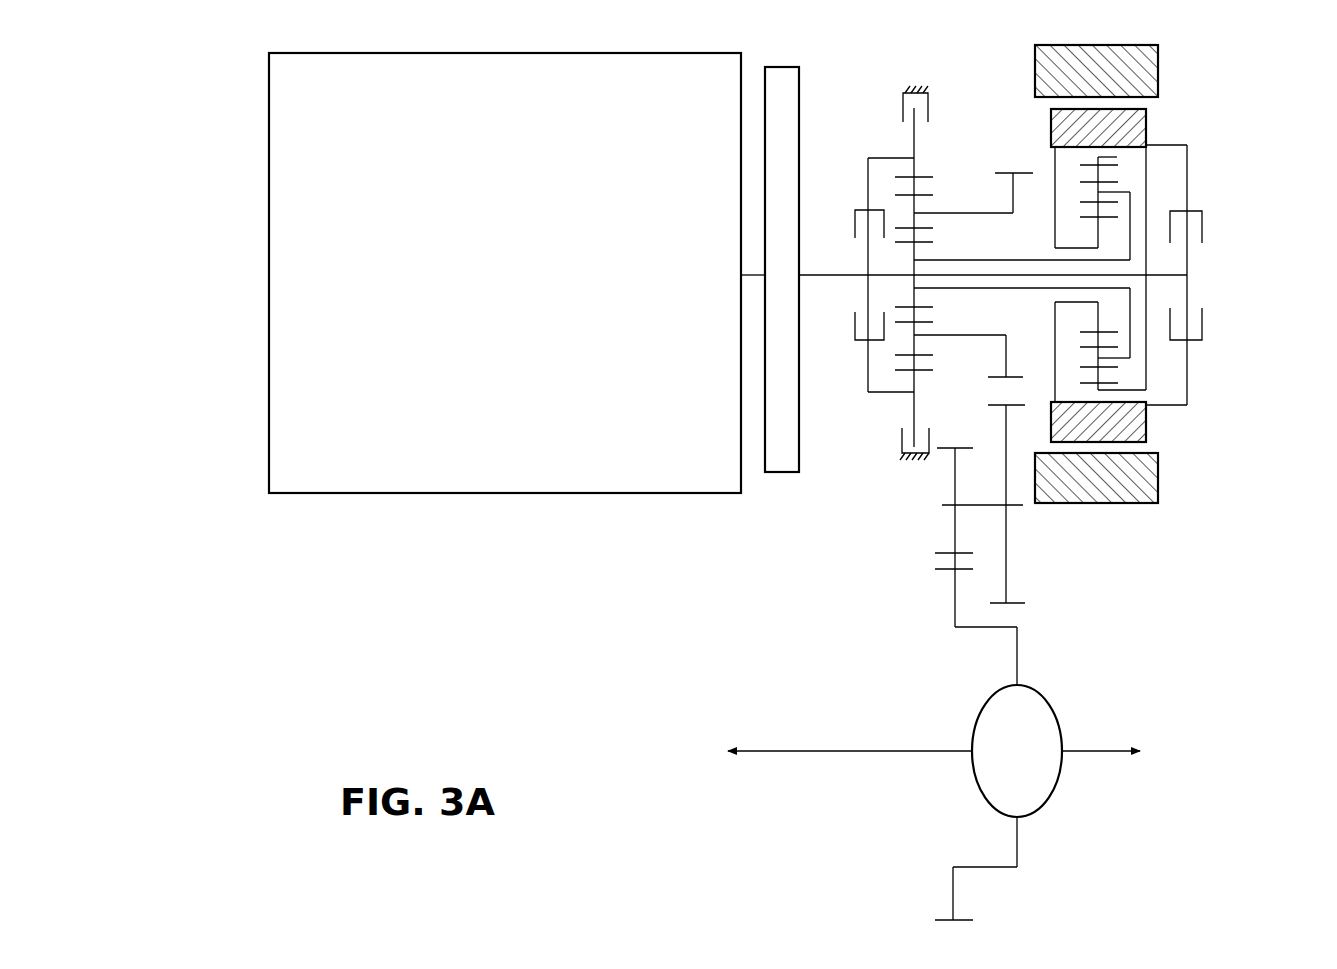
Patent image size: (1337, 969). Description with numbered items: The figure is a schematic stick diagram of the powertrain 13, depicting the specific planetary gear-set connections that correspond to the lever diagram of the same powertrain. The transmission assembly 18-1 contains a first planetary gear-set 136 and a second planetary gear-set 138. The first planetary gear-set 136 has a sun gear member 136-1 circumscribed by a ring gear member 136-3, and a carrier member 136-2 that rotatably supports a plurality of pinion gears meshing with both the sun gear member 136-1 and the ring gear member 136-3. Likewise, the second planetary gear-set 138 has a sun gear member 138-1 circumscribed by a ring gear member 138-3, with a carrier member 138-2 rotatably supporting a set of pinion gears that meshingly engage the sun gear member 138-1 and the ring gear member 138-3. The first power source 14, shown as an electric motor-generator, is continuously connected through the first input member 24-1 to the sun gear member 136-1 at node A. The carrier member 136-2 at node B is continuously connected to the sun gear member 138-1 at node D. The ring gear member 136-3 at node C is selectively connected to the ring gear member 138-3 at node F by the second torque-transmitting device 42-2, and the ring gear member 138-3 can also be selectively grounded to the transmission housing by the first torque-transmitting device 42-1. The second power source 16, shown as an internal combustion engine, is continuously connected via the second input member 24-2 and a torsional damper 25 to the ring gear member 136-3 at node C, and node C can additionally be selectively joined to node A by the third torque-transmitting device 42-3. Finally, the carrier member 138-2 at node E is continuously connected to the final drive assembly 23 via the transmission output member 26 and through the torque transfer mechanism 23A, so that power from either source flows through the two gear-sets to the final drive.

The powertrain 13 is at (583, 593).
The first power source 14 is at (1135, 45).
The second power source 16 is at (443, 493).
The transmission assembly 18-1 is at (998, 48).
The final drive assembly 23 is at (1050, 706).
The torque transfer mechanism 23A is at (1045, 533).
The first input member 24-1 is at (1090, 302).
The second input member 24-2 is at (820, 278).
The torsional damper 25 is at (780, 67).
The transmission output member 26 is at (1006, 357).
The first torque-transmitting device 42-1 is at (928, 104).
The second torque-transmitting device 42-2 is at (868, 208).
The third torque-transmitting device 42-3 is at (1202, 322).
The first planetary gear-set 136 is at (1154, 262).
The sun gear member 136-1 is at (1108, 228).
The carrier member 136-2 is at (1130, 288).
The ring gear member 136-3 is at (1105, 157).
The second planetary gear-set 138 is at (973, 290).
The sun gear member 138-1 is at (925, 307).
The carrier member 138-2 is at (948, 213).
The ring gear member 138-3 is at (922, 176).